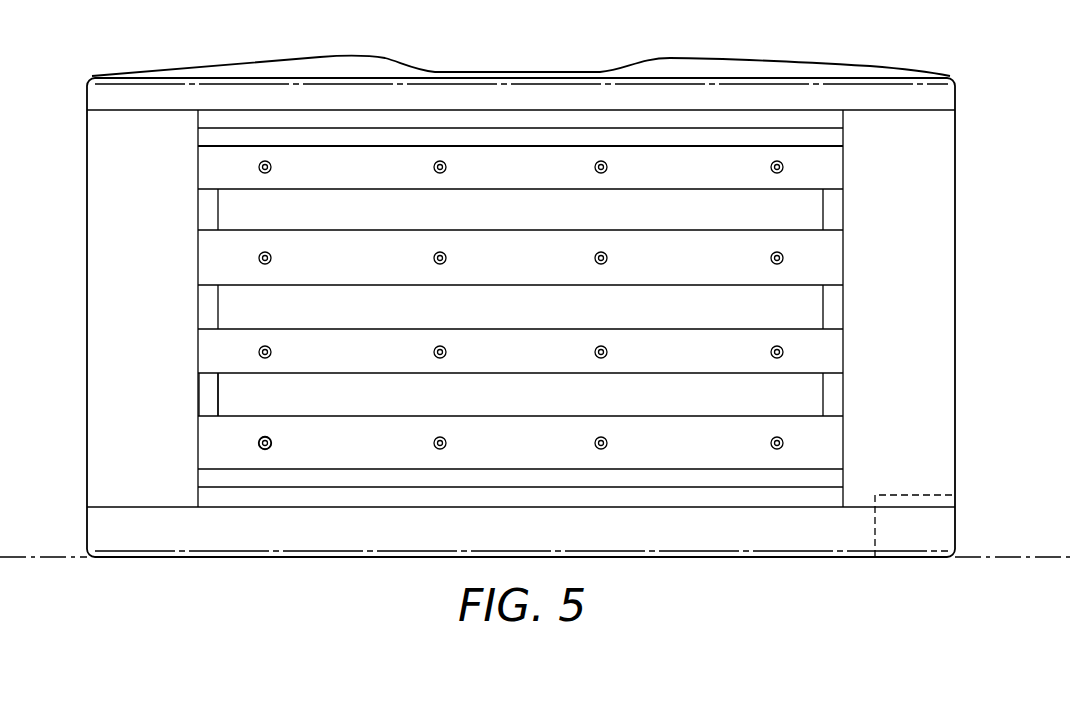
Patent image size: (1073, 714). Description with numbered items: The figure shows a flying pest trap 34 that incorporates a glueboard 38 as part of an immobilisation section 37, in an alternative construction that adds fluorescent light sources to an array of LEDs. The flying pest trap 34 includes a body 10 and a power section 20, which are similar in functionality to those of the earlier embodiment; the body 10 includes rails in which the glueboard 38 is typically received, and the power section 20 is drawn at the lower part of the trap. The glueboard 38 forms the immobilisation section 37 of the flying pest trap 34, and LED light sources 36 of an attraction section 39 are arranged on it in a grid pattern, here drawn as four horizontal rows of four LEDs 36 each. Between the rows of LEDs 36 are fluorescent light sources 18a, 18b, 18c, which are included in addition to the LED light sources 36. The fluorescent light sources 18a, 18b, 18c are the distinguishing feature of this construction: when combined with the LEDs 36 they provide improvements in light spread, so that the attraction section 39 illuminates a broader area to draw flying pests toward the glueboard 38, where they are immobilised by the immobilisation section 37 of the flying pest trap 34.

The body 10 is at (957, 350).
The flying pest trap 34 is at (972, 172).
The power section 20 is at (945, 527).
The immobilisation section 37 is at (686, 158).
The glueboard 38 is at (838, 166).
The fluorescent light source 18a is at (225, 207).
The fluorescent light source 18b is at (812, 312).
The fluorescent light source 18c is at (225, 388).
The LED light source 36 is at (272, 170).
The attraction section 39 is at (198, 404).